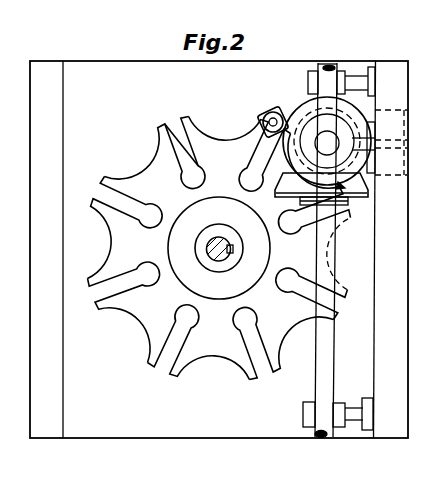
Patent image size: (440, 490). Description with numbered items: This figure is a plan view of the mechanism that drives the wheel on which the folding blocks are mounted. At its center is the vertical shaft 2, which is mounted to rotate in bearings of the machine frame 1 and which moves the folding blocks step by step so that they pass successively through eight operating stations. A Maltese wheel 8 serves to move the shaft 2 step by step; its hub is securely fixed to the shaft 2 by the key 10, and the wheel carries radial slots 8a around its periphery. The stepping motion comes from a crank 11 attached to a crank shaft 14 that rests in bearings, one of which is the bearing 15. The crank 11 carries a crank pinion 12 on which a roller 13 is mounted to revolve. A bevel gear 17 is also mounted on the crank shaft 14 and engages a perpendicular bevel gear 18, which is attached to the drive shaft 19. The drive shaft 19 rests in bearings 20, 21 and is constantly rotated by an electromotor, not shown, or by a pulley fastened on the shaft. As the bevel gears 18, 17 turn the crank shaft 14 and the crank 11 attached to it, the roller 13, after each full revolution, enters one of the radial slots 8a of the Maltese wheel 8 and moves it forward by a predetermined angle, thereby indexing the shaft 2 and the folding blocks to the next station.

The machine frame 1 is at (400, 229).
The vertical shaft 2 is at (207, 252).
The Maltese wheel 8 is at (145, 316).
The radial slots 8a is at (172, 130).
The key 10 is at (238, 248).
The crank 11 is at (288, 111).
The crank pinion 12 is at (279, 111).
The roller 13 is at (265, 112).
The crank shaft 14 is at (356, 111).
The bearing 15 is at (356, 155).
The bevel gear 17 is at (368, 182).
The perpendicular bevel gear 18 is at (354, 200).
The drive shaft 19 is at (334, 338).
The bearing 20 is at (358, 83).
The bearing 21 is at (365, 411).